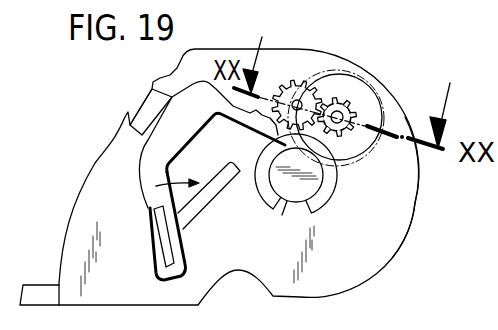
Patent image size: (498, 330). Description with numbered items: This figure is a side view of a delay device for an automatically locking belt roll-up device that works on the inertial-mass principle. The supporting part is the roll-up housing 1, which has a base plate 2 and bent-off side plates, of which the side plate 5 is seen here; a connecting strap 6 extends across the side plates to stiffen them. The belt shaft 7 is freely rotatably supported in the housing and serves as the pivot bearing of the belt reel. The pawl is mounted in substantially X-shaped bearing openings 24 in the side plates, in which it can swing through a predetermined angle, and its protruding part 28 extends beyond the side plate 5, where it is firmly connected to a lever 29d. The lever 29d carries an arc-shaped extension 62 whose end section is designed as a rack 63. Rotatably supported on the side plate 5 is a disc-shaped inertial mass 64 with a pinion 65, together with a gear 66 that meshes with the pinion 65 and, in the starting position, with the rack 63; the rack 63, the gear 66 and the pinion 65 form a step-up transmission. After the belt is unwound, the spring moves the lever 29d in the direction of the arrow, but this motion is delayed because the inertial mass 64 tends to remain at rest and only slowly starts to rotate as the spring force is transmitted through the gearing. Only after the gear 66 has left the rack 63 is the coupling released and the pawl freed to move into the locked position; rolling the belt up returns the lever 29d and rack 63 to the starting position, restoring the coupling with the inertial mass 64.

The roll-up housing 1 is at (388, 89).
The base plate 2 is at (40, 283).
The side plate 5 is at (414, 200).
The connecting strap 6 is at (148, 118).
The belt shaft 7 is at (284, 188).
The bearing openings 24 is at (205, 209).
The protruding part of pawl 28 is at (165, 241).
The lever 29d is at (149, 206).
The arc-shaped extension 62 is at (241, 118).
The rack 63 is at (265, 113).
The inertial mass 64 is at (338, 72).
The pinion 65 is at (346, 111).
The gear 66 is at (297, 130).